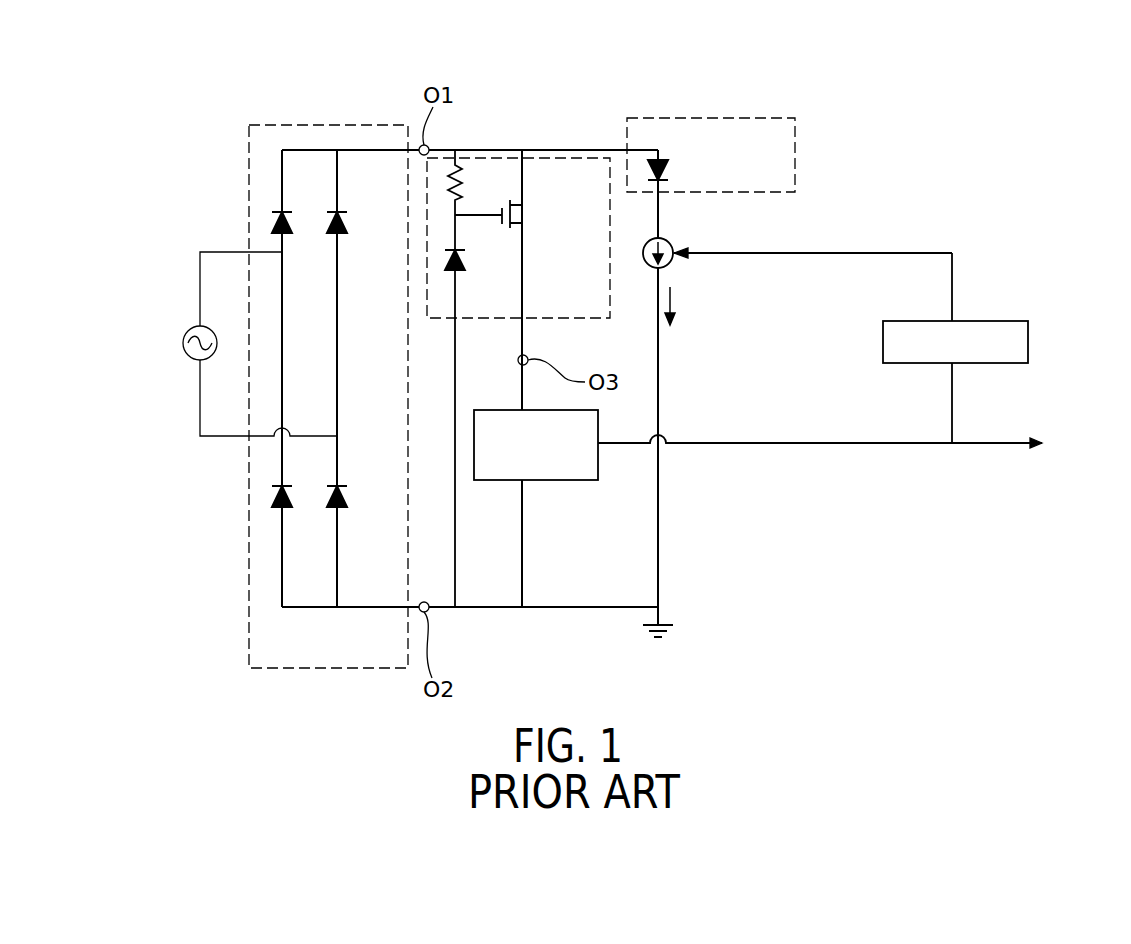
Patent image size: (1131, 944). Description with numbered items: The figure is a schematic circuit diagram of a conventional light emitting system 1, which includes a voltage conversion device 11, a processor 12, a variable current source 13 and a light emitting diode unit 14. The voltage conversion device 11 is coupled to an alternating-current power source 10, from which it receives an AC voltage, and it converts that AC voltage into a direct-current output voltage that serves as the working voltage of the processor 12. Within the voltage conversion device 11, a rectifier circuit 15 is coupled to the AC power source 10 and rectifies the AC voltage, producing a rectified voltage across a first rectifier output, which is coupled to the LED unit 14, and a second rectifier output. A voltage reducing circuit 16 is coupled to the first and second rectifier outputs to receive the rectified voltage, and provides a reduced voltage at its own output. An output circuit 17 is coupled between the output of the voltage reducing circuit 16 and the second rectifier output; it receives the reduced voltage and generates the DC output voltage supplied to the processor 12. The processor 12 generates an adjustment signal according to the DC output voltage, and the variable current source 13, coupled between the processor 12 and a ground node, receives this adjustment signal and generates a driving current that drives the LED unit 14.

The light emitting system 1 is at (213, 192).
The alternating-current power source 10 is at (188, 328).
The voltage conversion device 11 is at (732, 507).
The processor 12 is at (992, 321).
The variable current source 13 is at (670, 238).
The light emitting diode unit 14 is at (760, 118).
The rectifier circuit 15 is at (283, 125).
The voltage reducing circuit 16 is at (497, 158).
The output circuit 17 is at (550, 480).